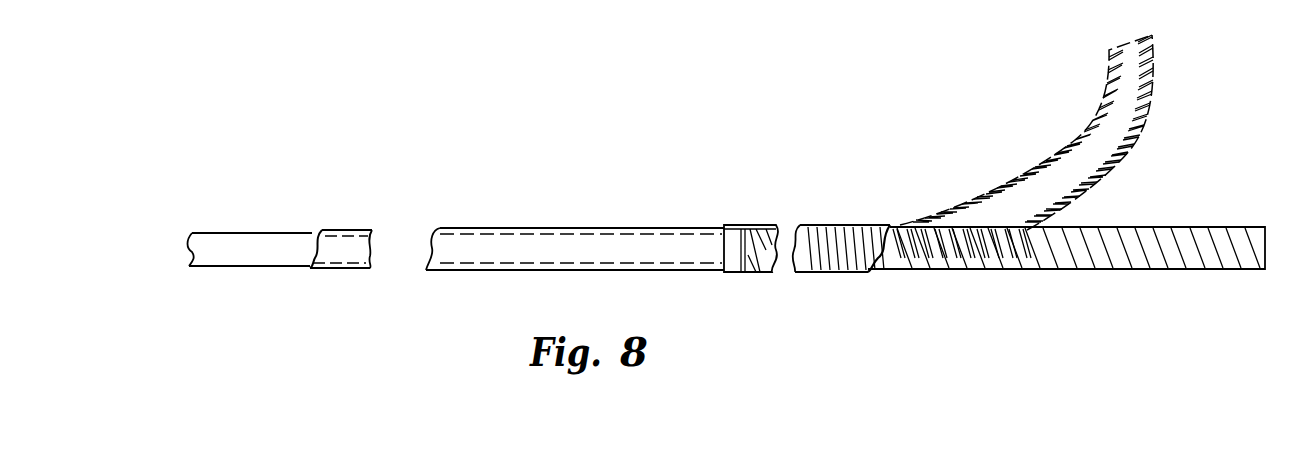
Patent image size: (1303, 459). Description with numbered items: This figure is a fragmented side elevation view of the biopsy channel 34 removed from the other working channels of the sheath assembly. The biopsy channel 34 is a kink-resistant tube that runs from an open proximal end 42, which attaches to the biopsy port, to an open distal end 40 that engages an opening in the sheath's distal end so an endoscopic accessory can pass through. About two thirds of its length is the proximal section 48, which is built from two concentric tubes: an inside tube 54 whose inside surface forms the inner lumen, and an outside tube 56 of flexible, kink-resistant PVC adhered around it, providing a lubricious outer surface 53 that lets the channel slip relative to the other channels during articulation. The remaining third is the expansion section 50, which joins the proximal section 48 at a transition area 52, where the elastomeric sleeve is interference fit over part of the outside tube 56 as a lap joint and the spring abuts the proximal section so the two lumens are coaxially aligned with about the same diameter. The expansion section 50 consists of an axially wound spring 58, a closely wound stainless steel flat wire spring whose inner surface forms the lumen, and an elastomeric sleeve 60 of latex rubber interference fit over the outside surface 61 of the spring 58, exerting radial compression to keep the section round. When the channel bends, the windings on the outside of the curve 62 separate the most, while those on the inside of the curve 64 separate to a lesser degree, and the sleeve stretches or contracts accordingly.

The biopsy channel 34 is at (762, 196).
The open distal end 40 is at (1078, 244).
The open proximal end 42 is at (192, 236).
The proximal section 48 is at (575, 196).
The expansion section 50 is at (841, 242).
The transition area 52 is at (762, 226).
The outer surface 53 is at (611, 220).
The inside tube 54 is at (297, 242).
The outside tube 56 is at (490, 230).
The axially wound spring 58 is at (1076, 285).
The elastomeric sleeve 60 is at (812, 274).
The outside surface 61 is at (940, 272).
The outside of the curve 62 is at (1074, 132).
The inside of the curve 64 is at (1083, 144).